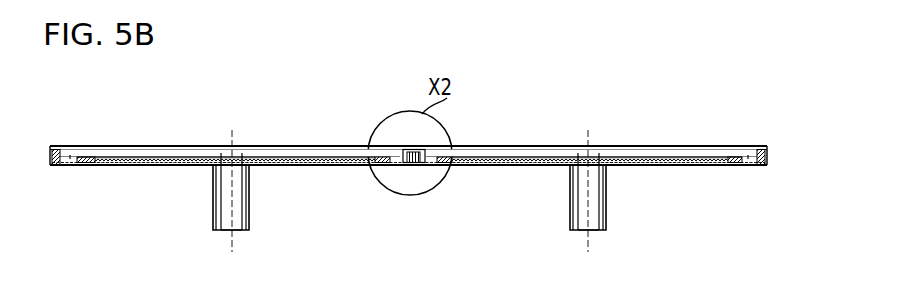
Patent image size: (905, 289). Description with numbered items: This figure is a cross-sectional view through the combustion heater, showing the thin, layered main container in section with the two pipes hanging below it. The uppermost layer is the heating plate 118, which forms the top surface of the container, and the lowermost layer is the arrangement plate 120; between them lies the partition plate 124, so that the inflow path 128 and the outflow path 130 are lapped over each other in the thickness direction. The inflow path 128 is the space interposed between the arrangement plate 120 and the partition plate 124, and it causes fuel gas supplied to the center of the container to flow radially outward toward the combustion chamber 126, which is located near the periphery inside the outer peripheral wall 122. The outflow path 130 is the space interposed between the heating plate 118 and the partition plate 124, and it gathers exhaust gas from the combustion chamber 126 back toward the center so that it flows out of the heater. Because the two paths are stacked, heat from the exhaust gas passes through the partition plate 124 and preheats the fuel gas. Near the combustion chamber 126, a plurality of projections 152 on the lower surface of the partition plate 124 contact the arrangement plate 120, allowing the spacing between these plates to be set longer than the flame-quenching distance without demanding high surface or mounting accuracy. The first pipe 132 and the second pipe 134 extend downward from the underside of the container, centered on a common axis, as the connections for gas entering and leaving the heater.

The heating plate 118 is at (330, 147).
The arrangement plate 120 is at (323, 165).
The outer peripheral wall 122 is at (50, 164).
The partition plate 124 is at (267, 155).
The combustion chamber 126 is at (73, 165).
The inflow path 128 is at (132, 167).
The outflow path 130 is at (135, 150).
The first pipe 132 is at (250, 215).
The second pipe 134 is at (243, 231).
The projections 152 is at (385, 165).